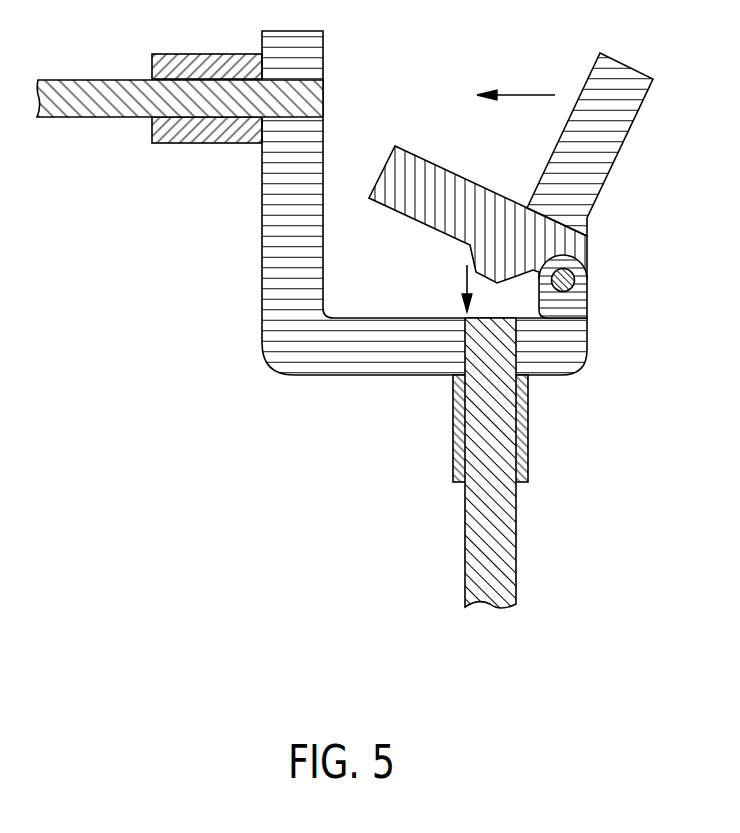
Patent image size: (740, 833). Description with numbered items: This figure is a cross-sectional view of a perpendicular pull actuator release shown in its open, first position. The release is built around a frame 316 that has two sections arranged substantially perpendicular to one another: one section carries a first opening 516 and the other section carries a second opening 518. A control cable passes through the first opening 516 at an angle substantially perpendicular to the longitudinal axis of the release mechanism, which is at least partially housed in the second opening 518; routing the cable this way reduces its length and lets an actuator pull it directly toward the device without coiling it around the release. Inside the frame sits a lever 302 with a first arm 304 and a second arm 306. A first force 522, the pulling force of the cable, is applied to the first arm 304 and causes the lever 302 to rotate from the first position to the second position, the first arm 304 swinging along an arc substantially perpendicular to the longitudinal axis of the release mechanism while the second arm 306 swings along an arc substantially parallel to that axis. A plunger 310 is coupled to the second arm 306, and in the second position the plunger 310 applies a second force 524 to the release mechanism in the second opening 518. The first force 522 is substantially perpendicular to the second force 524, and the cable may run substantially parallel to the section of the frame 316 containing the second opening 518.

The lever 302 is at (530, 235).
The first arm 304 is at (587, 162).
The second arm 306 is at (407, 190).
The plunger 310 is at (550, 290).
The frame 316 is at (276, 328).
The first opening 516 is at (323, 92).
The second opening 518 is at (520, 368).
The first force 522 is at (525, 95).
The second force 524 is at (467, 270).